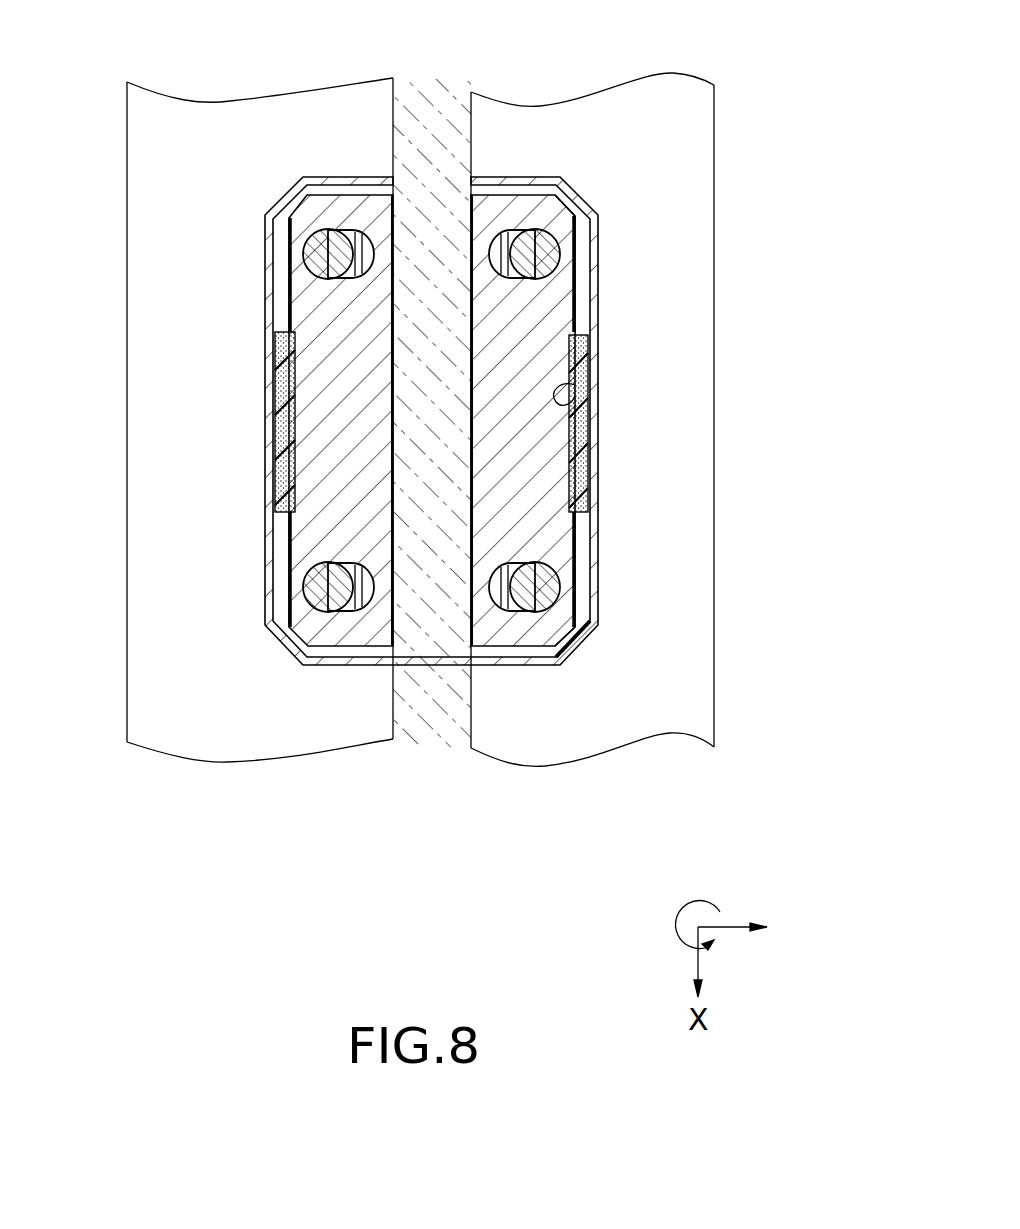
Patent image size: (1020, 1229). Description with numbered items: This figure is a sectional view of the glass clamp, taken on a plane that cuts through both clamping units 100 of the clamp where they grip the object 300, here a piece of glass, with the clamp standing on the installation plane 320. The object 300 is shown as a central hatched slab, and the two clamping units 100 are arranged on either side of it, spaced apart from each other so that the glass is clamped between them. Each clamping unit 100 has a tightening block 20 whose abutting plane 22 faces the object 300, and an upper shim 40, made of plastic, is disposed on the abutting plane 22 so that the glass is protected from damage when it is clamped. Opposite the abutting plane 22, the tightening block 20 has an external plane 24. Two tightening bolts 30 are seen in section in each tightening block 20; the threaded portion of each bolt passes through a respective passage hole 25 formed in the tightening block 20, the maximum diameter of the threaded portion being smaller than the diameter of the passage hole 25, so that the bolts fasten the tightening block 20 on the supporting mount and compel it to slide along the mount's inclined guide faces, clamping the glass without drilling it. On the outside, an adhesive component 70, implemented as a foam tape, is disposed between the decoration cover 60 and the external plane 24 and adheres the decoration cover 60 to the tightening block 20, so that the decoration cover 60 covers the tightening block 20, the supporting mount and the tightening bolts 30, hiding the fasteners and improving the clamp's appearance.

The tightening block 20 is at (496, 193).
The abutting plane 22 is at (477, 533).
The external plane 24 is at (562, 378).
The passage holes 25 is at (556, 202).
The tightening bolts 30 is at (540, 255).
The upper shim 40 is at (478, 308).
The decoration cover 60 is at (578, 655).
The adhesive component 70 is at (574, 461).
The clamping units 100 is at (548, 428).
The object 300 is at (447, 92).
The installation plane 320 is at (150, 391).